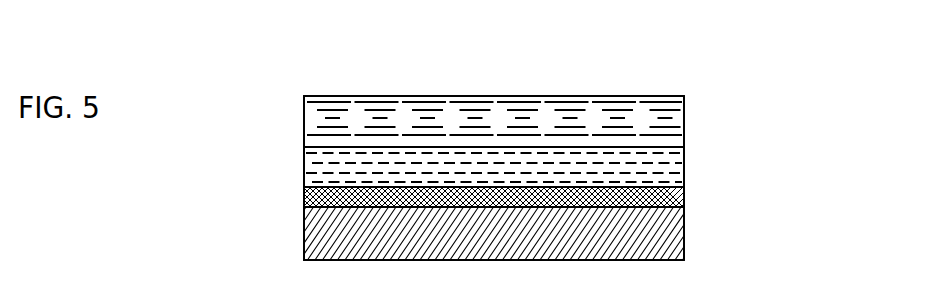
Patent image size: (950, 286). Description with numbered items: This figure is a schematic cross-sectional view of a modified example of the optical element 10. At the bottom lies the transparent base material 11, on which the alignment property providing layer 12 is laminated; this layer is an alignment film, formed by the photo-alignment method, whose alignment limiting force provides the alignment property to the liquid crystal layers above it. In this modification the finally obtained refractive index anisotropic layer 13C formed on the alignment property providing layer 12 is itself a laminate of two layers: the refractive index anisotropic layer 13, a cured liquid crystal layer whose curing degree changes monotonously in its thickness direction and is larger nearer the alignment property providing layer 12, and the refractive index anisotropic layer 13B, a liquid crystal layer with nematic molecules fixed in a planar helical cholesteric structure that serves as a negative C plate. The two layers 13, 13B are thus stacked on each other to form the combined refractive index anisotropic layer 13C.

The optical element 10 is at (581, 84).
The transparent base material 11 is at (684, 233).
The alignment property providing layer 12 is at (684, 197).
The refractive index anisotropic layer 13 is at (664, 156).
The refractive index anisotropic layer 13B is at (663, 122).
The refractive index anisotropic layer 13C is at (815, 113).